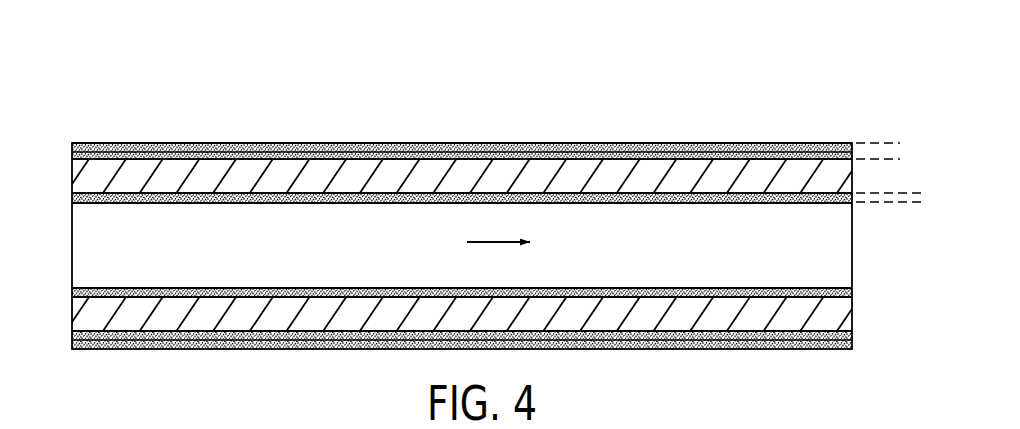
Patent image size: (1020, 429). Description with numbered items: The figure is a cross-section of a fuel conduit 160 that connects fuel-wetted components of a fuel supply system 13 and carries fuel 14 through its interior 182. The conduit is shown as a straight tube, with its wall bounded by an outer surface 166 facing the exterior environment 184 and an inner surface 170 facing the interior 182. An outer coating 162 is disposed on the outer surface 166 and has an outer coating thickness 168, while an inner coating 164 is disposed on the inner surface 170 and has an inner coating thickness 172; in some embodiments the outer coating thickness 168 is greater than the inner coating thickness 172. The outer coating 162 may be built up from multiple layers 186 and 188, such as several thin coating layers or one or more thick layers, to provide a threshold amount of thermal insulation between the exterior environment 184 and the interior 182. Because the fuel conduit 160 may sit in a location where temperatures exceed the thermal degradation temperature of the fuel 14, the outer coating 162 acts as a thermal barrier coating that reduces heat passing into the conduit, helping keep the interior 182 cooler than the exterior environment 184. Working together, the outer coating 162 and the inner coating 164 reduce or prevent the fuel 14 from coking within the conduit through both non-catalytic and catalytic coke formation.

The fuel supply system 13 is at (600, 48).
The fuel 14 is at (493, 243).
The fuel conduit 160 is at (245, 92).
The outer coating 162 is at (69, 146).
The inner coating 164 is at (69, 200).
The outer surface 166 is at (375, 158).
The outer coating thickness 168 is at (892, 183).
The inner surface 170 is at (230, 197).
The inner coating thickness 172 is at (915, 163).
The interior 182 is at (770, 263).
The exterior environment 184 is at (770, 98).
The layer 186 is at (680, 336).
The layer 188 is at (738, 347).